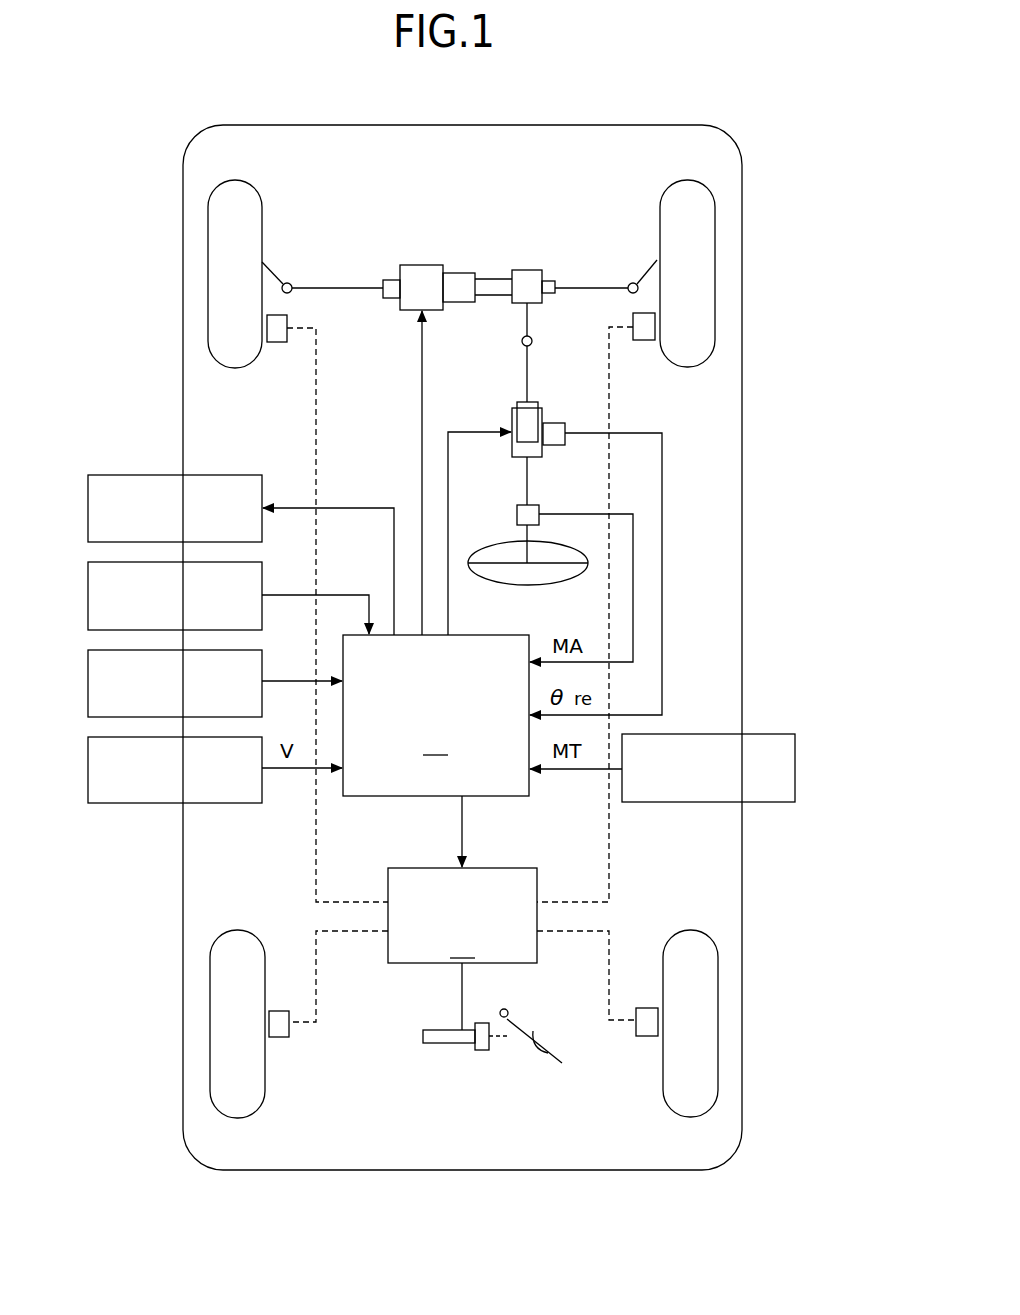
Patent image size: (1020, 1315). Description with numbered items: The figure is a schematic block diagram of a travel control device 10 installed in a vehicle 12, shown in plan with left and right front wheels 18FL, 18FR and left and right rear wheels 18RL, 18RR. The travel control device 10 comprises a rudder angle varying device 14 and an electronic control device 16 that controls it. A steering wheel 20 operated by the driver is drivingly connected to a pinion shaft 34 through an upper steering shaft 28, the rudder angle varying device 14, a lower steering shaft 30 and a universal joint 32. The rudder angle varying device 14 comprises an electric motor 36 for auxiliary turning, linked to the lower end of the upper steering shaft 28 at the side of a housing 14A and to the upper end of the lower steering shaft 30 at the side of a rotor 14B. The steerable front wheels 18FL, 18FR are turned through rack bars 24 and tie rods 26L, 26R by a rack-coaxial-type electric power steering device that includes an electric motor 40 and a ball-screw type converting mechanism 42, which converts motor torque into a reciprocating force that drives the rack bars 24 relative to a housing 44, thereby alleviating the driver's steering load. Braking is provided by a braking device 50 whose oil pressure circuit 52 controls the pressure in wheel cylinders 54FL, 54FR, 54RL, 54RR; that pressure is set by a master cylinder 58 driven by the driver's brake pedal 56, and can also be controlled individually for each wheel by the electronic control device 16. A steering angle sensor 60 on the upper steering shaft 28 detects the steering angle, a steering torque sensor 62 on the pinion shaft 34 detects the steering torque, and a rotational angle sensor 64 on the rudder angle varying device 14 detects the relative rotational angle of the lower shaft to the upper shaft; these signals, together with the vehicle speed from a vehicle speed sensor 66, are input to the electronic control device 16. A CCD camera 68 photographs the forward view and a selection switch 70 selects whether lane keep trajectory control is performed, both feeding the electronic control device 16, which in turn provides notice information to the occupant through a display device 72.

The travel control device 10 is at (490, 230).
The vehicle 12 is at (742, 543).
The rudder angle varying device 14 is at (476, 347).
The housing 14A is at (542, 422).
The rotor 14B is at (517, 424).
The electronic control device 16 is at (436, 715).
The left front wheel 18FL is at (208, 290).
The right front wheel 18FR is at (715, 288).
The left rear wheel 18RL is at (210, 1033).
The right rear wheel 18RR is at (718, 1033).
The steering wheel 20 is at (512, 585).
The rack bar 24 is at (340, 288).
The left tie rod 26L is at (278, 271).
The right tie rod 26R is at (648, 270).
The upper steering shaft 28 is at (527, 488).
The lower steering shaft 30 is at (527, 370).
The universal joint 32 is at (519, 342).
The pinion shaft 34 is at (527, 318).
The electric motor for auxiliary turning 36 is at (526, 406).
The electric motor 40 is at (423, 265).
The converting mechanism 42 is at (454, 304).
The housing 44 is at (392, 298).
The braking device 50 is at (459, 703).
The oil pressure circuit 52 is at (462, 915).
The left front wheel cylinder 54FL is at (277, 342).
The right front wheel cylinder 54FR is at (644, 340).
The left rear wheel cylinder 54RL is at (279, 1037).
The right rear wheel cylinder 54RR is at (647, 1036).
The brake pedal 56 is at (538, 1032).
The master cylinder 58 is at (444, 1030).
The steering angle sensor 60 is at (517, 514).
The steering torque sensor 62 is at (675, 803).
The rotational angle sensor 64 is at (553, 446).
The vehicle speed sensor 66 is at (88, 771).
The CCD camera 68 is at (88, 684).
The selection switch 70 is at (88, 596).
The display device 72 is at (88, 509).